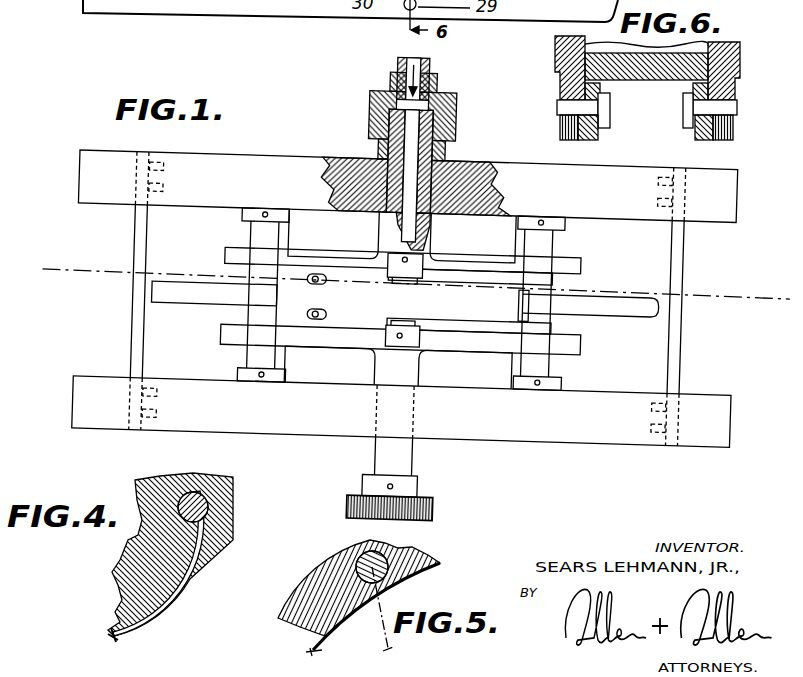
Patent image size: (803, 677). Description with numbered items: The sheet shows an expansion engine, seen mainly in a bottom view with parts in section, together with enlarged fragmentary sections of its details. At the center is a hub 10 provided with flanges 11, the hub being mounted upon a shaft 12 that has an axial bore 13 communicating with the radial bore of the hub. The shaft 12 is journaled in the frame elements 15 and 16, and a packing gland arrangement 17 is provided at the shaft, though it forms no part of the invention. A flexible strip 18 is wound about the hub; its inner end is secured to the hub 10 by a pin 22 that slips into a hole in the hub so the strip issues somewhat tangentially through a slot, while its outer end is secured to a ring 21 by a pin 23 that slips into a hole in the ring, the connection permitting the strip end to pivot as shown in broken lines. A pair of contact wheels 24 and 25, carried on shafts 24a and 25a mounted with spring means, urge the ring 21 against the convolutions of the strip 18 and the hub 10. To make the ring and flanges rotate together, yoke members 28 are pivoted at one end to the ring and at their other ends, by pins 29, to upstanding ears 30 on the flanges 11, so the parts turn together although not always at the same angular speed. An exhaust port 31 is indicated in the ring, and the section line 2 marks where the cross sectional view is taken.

In FIG. 1, the section line 2— 2 is at (57, 262).
In FIG. 4, the hub 10 is at (233, 484).
In FIG. 1, the flanges 11 is at (581, 247).
In FIG. 6, the flanges 11 is at (556, 57).
In FIG. 1, the shaft 12 is at (438, 220).
In FIG. 1, the axial bore 13 is at (387, 207).
In FIG. 1, the frame element 15 is at (341, 150).
In FIG. 1, the frame element 16 is at (466, 428).
In FIG. 1, the packing gland arrangement 17 is at (433, 83).
In FIG. 4, the flexible strip 18 is at (191, 588).
In FIG. 5, the flexible strip 18 is at (314, 637).
In FIG. 1, the ring 21 is at (462, 282).
In FIG. 6, the ring 21 is at (631, 80).
In FIG. 5, the ring 21 is at (317, 578).
In FIG. 4, the pin 22 is at (209, 510).
In FIG. 5, the pin 23 is at (361, 556).
In FIG. 1, the contact wheel 24 is at (601, 284).
In FIG. 1, the shaft of contact wheel 24a is at (565, 227).
In FIG. 1, the contact wheel 25 is at (186, 301).
In FIG. 1, the shaft of contact wheel 25a is at (255, 229).
In FIG. 6, the yoke members 28 is at (591, 132).
In FIG. 6, the pins 29 is at (607, 108).
In FIG. 6, the upstanding ears 30 is at (559, 88).
In FIG. 1, the exhaust port 31 is at (330, 272).